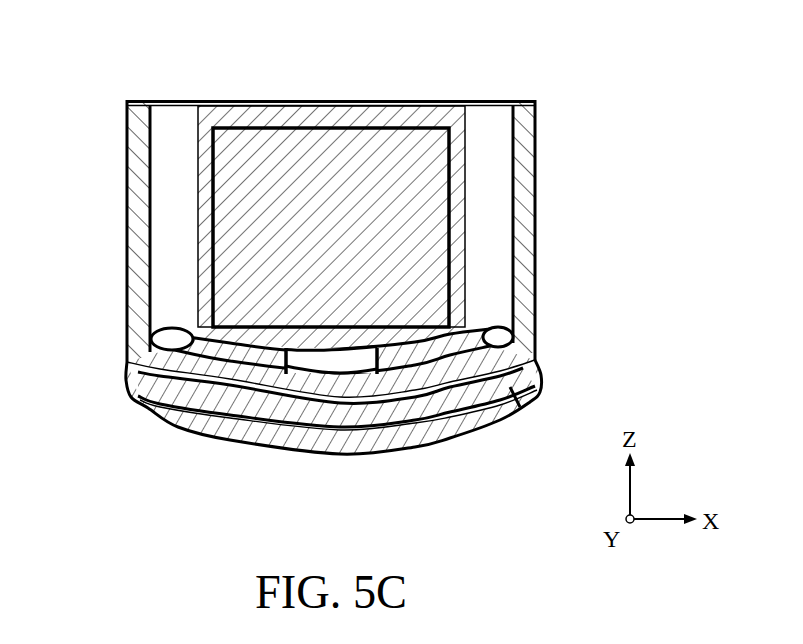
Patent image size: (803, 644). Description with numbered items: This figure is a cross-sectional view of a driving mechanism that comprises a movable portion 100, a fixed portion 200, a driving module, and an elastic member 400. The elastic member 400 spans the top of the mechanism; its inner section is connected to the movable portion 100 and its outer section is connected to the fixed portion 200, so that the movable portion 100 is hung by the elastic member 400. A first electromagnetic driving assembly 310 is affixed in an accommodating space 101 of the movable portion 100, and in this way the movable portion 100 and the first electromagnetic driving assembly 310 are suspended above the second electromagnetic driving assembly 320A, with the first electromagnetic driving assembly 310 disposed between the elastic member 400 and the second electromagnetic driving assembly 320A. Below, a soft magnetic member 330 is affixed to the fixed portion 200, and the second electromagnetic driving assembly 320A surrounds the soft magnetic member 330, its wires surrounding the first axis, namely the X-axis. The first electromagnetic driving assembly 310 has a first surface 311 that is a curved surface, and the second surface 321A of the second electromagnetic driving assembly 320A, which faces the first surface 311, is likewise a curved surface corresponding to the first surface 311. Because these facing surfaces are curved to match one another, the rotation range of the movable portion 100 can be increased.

The movable portion 100 is at (265, 103).
The accommodating space 101 is at (443, 222).
The fixed portion 200 is at (532, 232).
The first electromagnetic driving assembly 310 is at (334, 172).
The first surface 311 is at (428, 338).
The second electromagnetic driving assembly 320A is at (365, 440).
The second surface 321A is at (190, 338).
The soft magnetic member 330 is at (322, 426).
The elastic member 400 is at (477, 100).